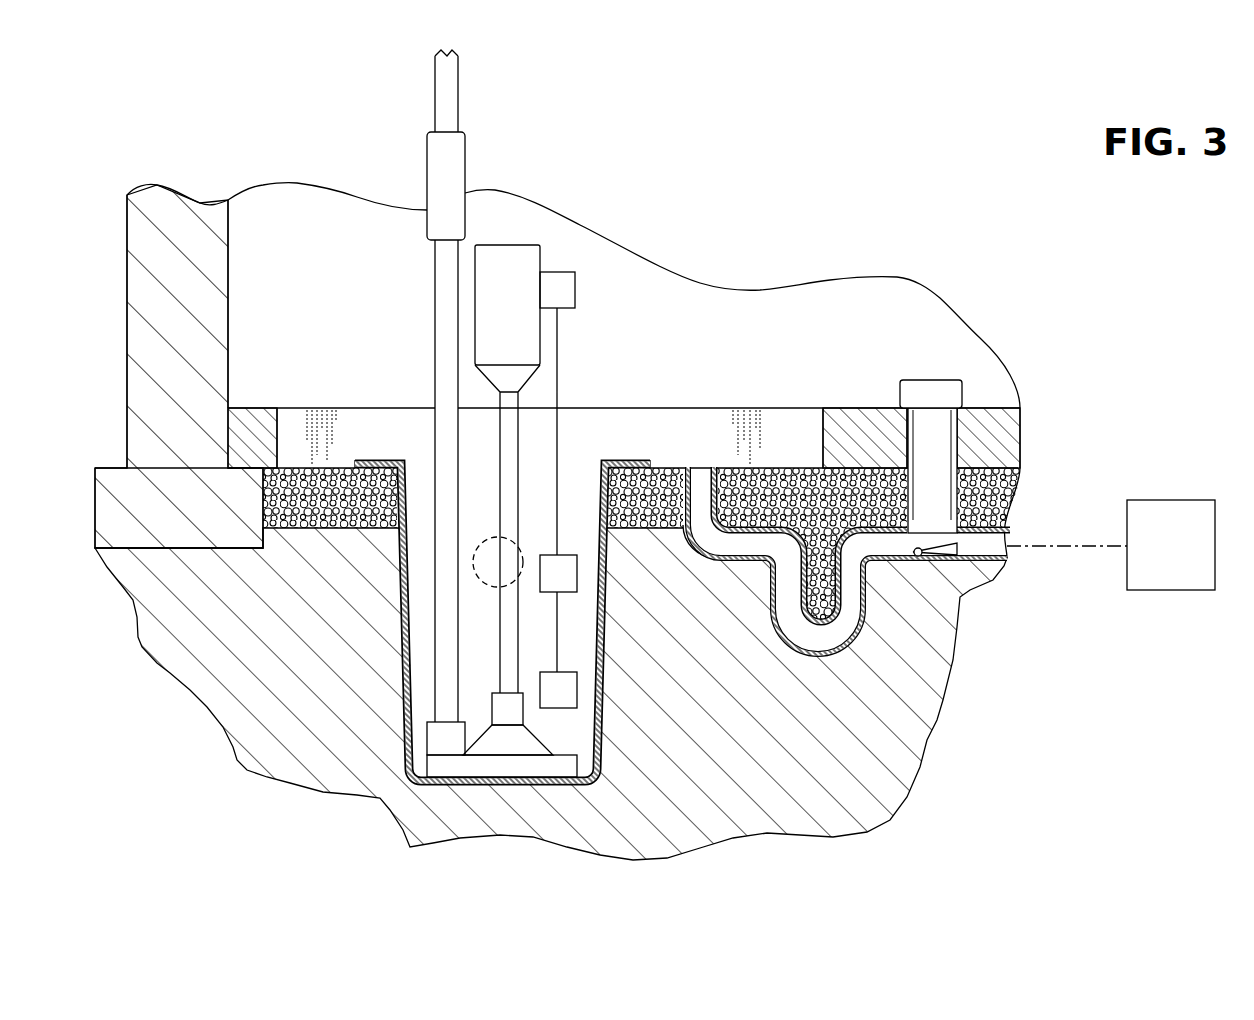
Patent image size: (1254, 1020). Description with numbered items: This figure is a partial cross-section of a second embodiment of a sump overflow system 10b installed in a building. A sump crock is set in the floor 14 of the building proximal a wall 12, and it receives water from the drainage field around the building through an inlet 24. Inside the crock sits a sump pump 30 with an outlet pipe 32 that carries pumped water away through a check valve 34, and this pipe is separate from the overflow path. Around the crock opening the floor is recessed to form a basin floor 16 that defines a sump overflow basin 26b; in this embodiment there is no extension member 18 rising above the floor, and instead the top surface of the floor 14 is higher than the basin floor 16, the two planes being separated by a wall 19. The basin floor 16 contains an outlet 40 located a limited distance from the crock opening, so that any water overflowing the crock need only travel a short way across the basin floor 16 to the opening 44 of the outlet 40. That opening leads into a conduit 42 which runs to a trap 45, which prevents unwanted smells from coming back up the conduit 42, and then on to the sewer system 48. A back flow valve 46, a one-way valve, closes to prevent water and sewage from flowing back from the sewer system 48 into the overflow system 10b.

The sump overflow system 10b is at (746, 186).
The wall 12 is at (230, 242).
The floor 14 is at (247, 422).
The basin floor 16 is at (313, 466).
The extension member 18 is at (585, 420).
The wall 19 is at (283, 437).
The inlet 24 is at (485, 553).
The sump overflow basin 26b is at (768, 379).
The sump pump 30 is at (505, 766).
The outlet pipe 32 is at (443, 344).
The check valve 34 is at (440, 176).
The outlet 40 is at (686, 452).
The conduit 42 is at (735, 561).
The opening 44 is at (695, 466).
The trap 45 is at (812, 652).
The back flow valve 46 is at (927, 388).
The sewer system 48 is at (1160, 559).